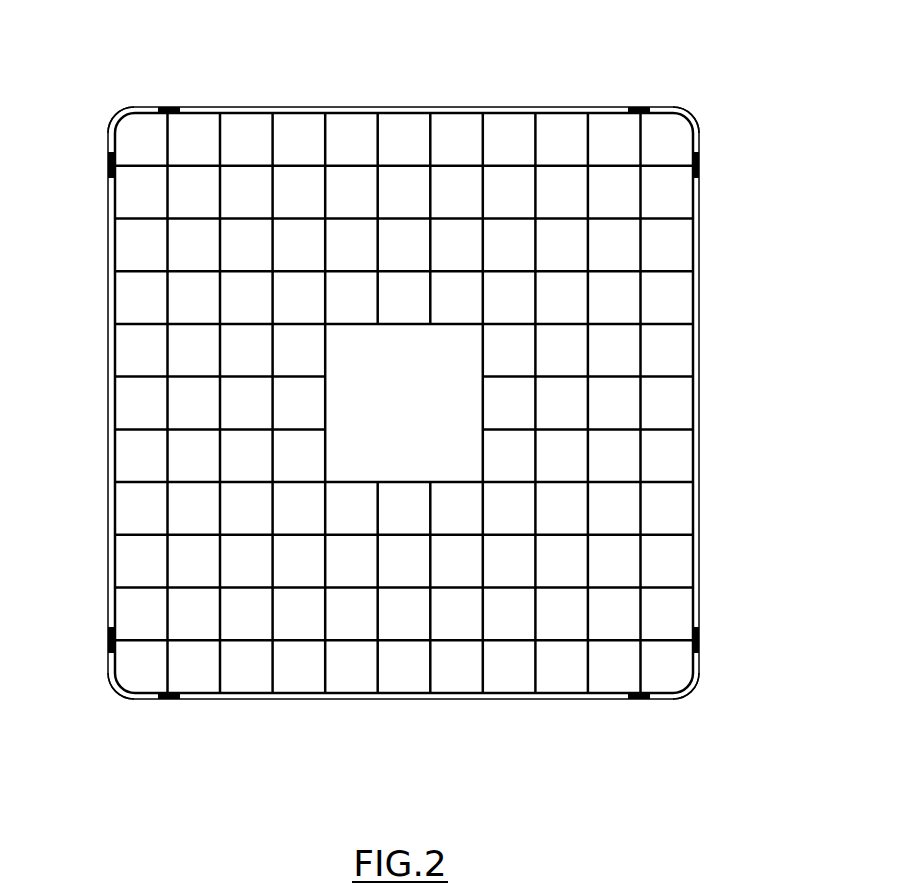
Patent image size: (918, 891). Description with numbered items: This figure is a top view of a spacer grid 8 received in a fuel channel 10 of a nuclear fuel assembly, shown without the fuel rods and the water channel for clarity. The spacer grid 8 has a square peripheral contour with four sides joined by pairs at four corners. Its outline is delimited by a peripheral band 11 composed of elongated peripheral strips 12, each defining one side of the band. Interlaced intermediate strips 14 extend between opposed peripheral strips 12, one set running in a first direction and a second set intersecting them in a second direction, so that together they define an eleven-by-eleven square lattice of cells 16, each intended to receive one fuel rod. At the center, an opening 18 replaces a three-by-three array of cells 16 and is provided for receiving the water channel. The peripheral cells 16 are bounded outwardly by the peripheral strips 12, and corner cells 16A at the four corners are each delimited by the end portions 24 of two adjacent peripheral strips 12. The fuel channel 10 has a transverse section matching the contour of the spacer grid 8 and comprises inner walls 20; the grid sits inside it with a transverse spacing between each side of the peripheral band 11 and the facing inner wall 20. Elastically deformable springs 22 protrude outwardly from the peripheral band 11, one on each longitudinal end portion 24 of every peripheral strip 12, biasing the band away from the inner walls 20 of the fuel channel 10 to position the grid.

The spacer grid 8 is at (104, 215).
The fuel channel 10 is at (703, 412).
The peripheral band 11 is at (100, 365).
The peripheral strips 12 is at (312, 113).
The intermediate strips 14 is at (638, 140).
The cells 16 is at (505, 190).
The corner cells 16A is at (137, 135).
The opening 18 is at (392, 414).
The inner walls 20 is at (243, 119).
The springs 22 is at (168, 107).
The end portions 24 is at (142, 108).